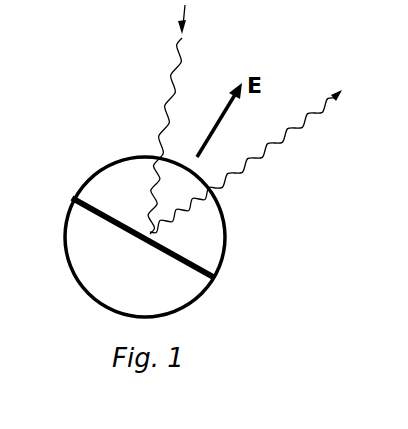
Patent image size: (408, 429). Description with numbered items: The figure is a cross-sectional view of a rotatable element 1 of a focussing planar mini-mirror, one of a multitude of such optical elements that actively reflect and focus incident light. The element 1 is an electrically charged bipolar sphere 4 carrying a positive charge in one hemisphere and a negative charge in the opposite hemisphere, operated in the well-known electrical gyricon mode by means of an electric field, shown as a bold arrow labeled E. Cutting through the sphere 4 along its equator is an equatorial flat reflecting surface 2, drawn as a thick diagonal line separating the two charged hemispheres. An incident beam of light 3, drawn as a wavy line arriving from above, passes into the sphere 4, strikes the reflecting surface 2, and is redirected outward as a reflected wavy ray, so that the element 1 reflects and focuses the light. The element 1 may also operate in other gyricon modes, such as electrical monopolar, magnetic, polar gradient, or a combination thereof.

The rotatable element 1 is at (171, 237).
The equatorial flat reflecting surface 2 is at (112, 228).
The incident beam of light 3 is at (167, 77).
The electrically charged bipolar sphere 4 is at (213, 235).